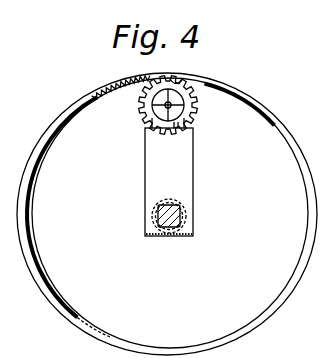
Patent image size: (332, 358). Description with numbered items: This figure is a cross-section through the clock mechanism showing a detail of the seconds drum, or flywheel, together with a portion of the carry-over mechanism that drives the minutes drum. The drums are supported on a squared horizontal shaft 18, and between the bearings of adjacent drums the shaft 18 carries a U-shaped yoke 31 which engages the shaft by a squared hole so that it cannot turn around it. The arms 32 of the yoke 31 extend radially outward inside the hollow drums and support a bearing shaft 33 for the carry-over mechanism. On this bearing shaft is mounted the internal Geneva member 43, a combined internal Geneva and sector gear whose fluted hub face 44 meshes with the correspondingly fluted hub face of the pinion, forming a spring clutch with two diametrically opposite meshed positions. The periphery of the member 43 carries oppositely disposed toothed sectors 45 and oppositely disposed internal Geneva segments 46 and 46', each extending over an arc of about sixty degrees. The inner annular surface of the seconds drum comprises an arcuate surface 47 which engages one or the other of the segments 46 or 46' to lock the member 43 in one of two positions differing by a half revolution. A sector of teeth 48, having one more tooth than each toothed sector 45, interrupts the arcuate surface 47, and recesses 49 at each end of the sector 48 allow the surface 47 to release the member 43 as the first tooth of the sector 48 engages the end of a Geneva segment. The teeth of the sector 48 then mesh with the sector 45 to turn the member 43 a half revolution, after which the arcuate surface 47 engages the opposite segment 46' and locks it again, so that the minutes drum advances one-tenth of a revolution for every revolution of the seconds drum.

The squared horizontal shaft 18 is at (157, 215).
The U-shaped yoke 31 is at (174, 237).
The arms 32 is at (182, 180).
The bearing shaft 33 is at (164, 104).
The internal Geneva member 43 is at (203, 115).
The fluted hub face 44 is at (175, 122).
The toothed sector 45 is at (142, 103).
The internal Geneva segment 46 is at (192, 71).
The internal Geneva segment 46' is at (144, 146).
The arcuate surface 47 is at (306, 185).
The sector of teeth 48 is at (118, 84).
The recesses 49 is at (96, 93).